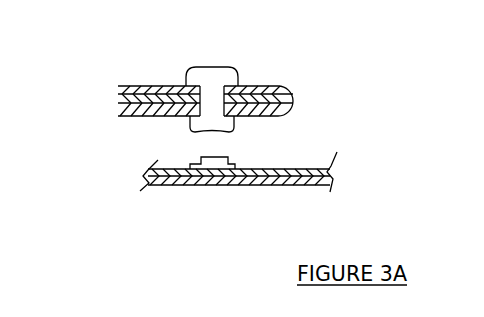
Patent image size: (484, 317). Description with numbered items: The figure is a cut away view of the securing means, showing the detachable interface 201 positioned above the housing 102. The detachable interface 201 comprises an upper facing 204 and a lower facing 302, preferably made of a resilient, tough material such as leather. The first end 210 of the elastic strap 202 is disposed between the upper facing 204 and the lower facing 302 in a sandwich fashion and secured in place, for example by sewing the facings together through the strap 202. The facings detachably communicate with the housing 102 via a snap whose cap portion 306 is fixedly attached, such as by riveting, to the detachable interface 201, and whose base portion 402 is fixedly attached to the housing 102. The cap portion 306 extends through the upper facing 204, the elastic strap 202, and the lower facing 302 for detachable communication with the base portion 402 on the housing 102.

The detachable interface 201 is at (325, 87).
The upper facing 204 is at (121, 90).
The strap 202 is at (121, 102).
The lower facing 302 is at (122, 113).
The first end 210 is at (272, 101).
The cap portion 306 is at (233, 70).
The base portion 402 is at (236, 157).
The housing 102 is at (283, 188).